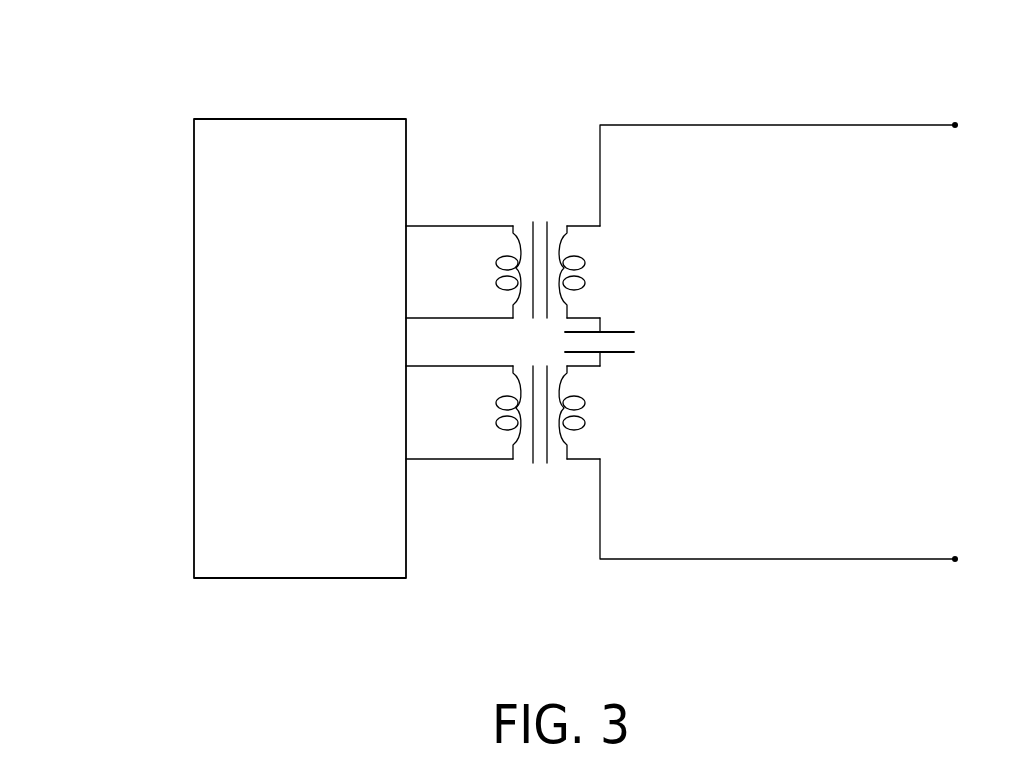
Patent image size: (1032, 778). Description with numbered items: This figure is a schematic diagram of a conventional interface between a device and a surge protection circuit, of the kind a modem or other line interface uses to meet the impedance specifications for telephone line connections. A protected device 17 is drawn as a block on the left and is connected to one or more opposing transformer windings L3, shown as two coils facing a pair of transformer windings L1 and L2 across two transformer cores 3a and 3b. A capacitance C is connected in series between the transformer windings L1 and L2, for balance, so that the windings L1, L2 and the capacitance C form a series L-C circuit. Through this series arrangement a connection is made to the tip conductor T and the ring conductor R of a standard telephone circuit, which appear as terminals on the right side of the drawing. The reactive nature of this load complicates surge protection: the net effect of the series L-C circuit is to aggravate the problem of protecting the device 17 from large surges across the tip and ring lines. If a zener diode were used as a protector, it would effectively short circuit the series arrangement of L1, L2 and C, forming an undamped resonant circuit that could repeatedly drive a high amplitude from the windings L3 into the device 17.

The protected device 17 is at (300, 298).
The first transformer 3a is at (496, 211).
The second transformer 3b is at (496, 468).
The transformer winding L1 is at (606, 272).
The transformer winding L2 is at (607, 412).
The opposing transformer windings L3 is at (471, 280).
The capacitance C is at (620, 342).
The tip conductor T is at (799, 165).
The ring conductor R is at (801, 520).